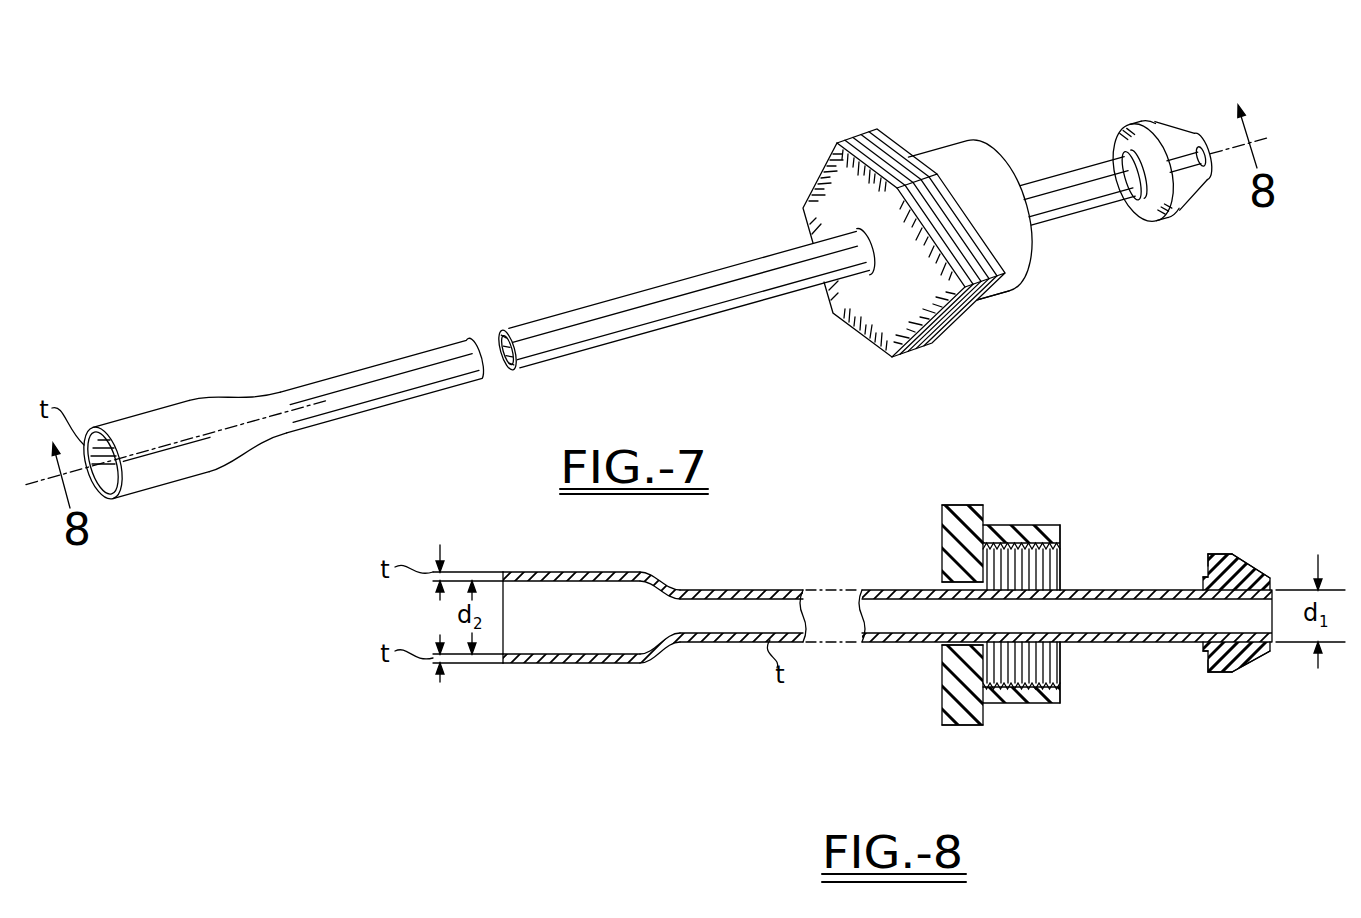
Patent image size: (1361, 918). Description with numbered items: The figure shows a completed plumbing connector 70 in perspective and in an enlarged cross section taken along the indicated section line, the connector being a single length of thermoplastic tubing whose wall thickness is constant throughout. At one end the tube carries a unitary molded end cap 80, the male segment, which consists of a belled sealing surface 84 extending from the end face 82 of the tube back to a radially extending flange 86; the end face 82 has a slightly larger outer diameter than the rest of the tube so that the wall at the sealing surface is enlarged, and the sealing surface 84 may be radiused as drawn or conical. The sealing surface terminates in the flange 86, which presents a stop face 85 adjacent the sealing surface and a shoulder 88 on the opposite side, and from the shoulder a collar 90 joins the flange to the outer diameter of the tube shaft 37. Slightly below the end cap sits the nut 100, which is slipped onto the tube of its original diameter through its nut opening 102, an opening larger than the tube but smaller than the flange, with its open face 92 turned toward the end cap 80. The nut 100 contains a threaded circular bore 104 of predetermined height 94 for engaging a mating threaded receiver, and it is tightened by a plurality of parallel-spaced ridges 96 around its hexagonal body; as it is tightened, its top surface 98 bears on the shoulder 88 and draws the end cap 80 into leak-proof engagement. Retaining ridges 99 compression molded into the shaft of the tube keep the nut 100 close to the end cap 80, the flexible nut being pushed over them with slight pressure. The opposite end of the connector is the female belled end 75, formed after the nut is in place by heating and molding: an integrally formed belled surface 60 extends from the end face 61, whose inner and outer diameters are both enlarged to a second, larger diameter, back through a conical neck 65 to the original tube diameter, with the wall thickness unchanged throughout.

In FIG. 7, the tube 37 is at (445, 348).
In FIG. 8, the tube 37 is at (772, 590).
In FIG. 7, the belled surface 60 is at (196, 476).
In FIG. 8, the belled surface 60 is at (607, 663).
In FIG. 7, the end face 61 is at (112, 500).
In FIG. 8, the end face 61 is at (501, 664).
In FIG. 7, the conical neck 65 is at (218, 400).
In FIG. 8, the conical neck 65 is at (667, 653).
In FIG. 7, the plumbing connector 70 is at (525, 272).
In FIG. 7, the belled end 75 is at (248, 473).
In FIG. 8, the belled end 75 is at (570, 674).
In FIG. 7, the unitary molded end cap 80 is at (1114, 118).
In FIG. 8, the unitary molded end cap 80 is at (1238, 543).
In FIG. 7, the end face 82 is at (1203, 140).
In FIG. 7, the sealing surface 84 is at (1187, 194).
In FIG. 8, the sealing surface 84 is at (1262, 654).
In FIG. 7, the stop face 85 is at (1180, 200).
In FIG. 7, the flange 86 is at (1167, 227).
In FIG. 8, the flange 86 is at (1221, 672).
In FIG. 7, the shoulder 88 is at (1140, 212).
In FIG. 8, the shoulder 88 is at (1212, 672).
In FIG. 7, the collar 90 is at (1132, 152).
In FIG. 8, the collar 90 is at (1202, 648).
In FIG. 7, the open face 92 is at (1030, 268).
In FIG. 8, the open face 92 is at (1061, 682).
In FIG. 7, the height of threaded bore 94 is at (937, 138).
In FIG. 8, the height of threaded bore 94 is at (1020, 704).
In FIG. 7, the parallel-spaced ridges 96 is at (928, 337).
In FIG. 8, the parallel-spaced ridges 96 is at (960, 726).
In FIG. 7, the top surface 98 is at (860, 323).
In FIG. 8, the top surface 98 is at (942, 668).
In FIG. 7, the retaining ridges 99 is at (767, 305).
In FIG. 7, the nut 100 is at (822, 153).
In FIG. 8, the nut 100 is at (1037, 510).
In FIG. 7, the nut opening 102 is at (858, 232).
In FIG. 8, the nut opening 102 is at (942, 582).
In FIG. 8, the threaded circular bore 104 is at (1047, 563).